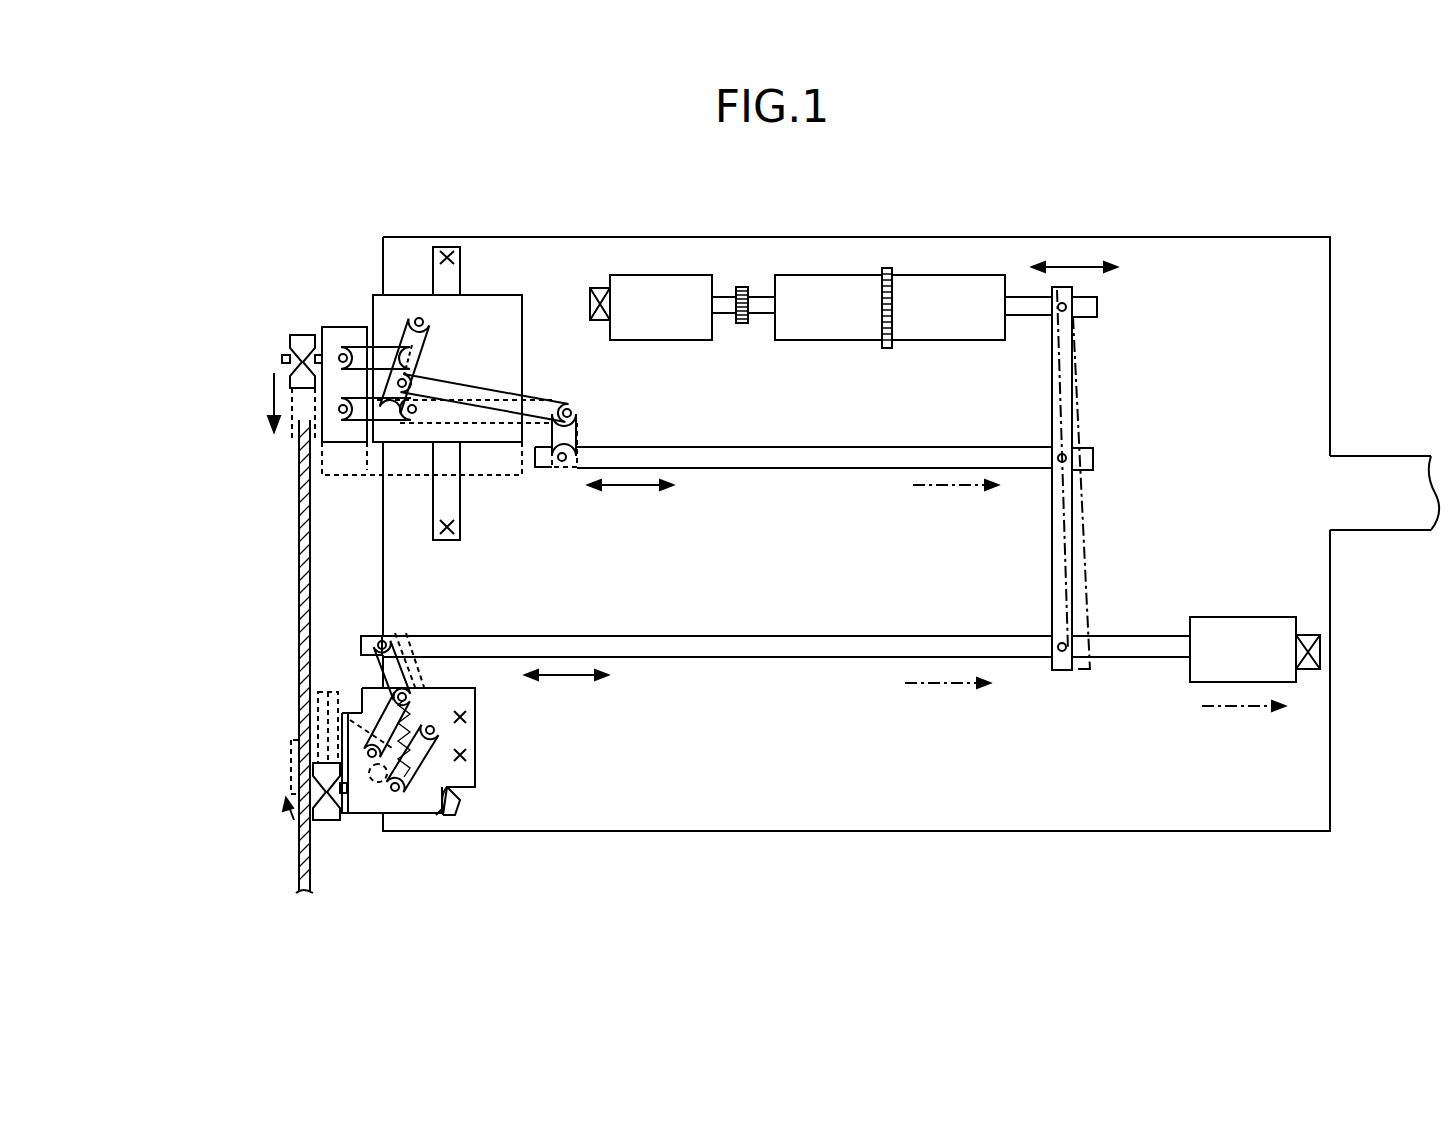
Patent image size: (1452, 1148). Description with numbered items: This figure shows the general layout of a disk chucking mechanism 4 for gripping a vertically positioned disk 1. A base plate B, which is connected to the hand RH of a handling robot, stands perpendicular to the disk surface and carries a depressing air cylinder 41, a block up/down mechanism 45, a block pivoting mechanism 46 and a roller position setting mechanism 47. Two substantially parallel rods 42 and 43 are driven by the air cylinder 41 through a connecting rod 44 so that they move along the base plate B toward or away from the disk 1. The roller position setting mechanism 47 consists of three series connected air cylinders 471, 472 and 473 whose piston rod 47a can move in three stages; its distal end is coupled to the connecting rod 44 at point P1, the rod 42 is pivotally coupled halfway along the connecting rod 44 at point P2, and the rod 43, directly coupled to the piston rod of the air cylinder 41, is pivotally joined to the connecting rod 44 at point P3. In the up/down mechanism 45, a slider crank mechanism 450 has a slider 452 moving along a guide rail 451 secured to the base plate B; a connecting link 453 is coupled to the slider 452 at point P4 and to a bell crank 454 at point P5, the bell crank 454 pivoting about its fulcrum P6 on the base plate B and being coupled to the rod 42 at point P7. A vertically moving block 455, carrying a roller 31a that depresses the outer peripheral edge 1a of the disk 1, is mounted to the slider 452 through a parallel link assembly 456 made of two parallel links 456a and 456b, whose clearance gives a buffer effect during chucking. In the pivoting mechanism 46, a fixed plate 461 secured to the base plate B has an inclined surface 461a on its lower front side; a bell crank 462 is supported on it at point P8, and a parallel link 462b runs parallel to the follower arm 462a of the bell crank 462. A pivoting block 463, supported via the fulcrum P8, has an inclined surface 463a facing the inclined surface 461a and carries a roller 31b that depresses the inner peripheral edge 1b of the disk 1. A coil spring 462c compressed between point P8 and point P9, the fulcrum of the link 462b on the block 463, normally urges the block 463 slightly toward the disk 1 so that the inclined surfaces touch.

The disk 1 is at (298, 596).
The outer peripheral edge 1a is at (302, 424).
The inner peripheral edge 1b is at (301, 754).
The chucking mechanism 4 is at (1172, 208).
The roller 31a is at (292, 333).
The roller 31b is at (328, 799).
The depressing air cylinder 41 is at (1245, 627).
The rod 42 is at (846, 452).
The rod 43 is at (883, 636).
The connecting rod 44 is at (1065, 383).
The block up/down mechanism 45 is at (340, 298).
The block pivoting mechanism 46 is at (386, 855).
The roller position setting mechanism 47 is at (905, 203).
The piston rod 47a is at (1022, 305).
The slider crank mechanism 450 is at (462, 318).
The guide rail 451 is at (455, 497).
The slider 452 is at (525, 297).
The connecting link 453 is at (420, 335).
The bell crank 454 is at (490, 390).
The vertically moving block 455 is at (327, 428).
The parallel link assembly 456 is at (362, 362).
The parallel link 456a is at (377, 410).
The parallel link 456b is at (330, 427).
The fixed plate 461 is at (475, 732).
The inclined surface 461a is at (447, 805).
The bell crank 462 is at (432, 667).
The follower arm 462a is at (380, 706).
The parallel link 462b is at (410, 790).
The coil spring 462c is at (432, 752).
The pivoting block 463 is at (363, 808).
The inclined surface 463a is at (440, 808).
The air cylinder 471 is at (657, 287).
The air cylinder 472 is at (828, 295).
The air cylinder 473 is at (966, 285).
The base plate B is at (517, 243).
The hand RH is at (1373, 472).
The point P1 is at (1073, 298).
The point P2 is at (1093, 458).
The point P3 is at (1062, 666).
The point P4 is at (418, 318).
The point P5 is at (406, 382).
The point P6 is at (575, 413).
The point P7 is at (560, 466).
The point P8 is at (412, 697).
The point P9 is at (397, 800).